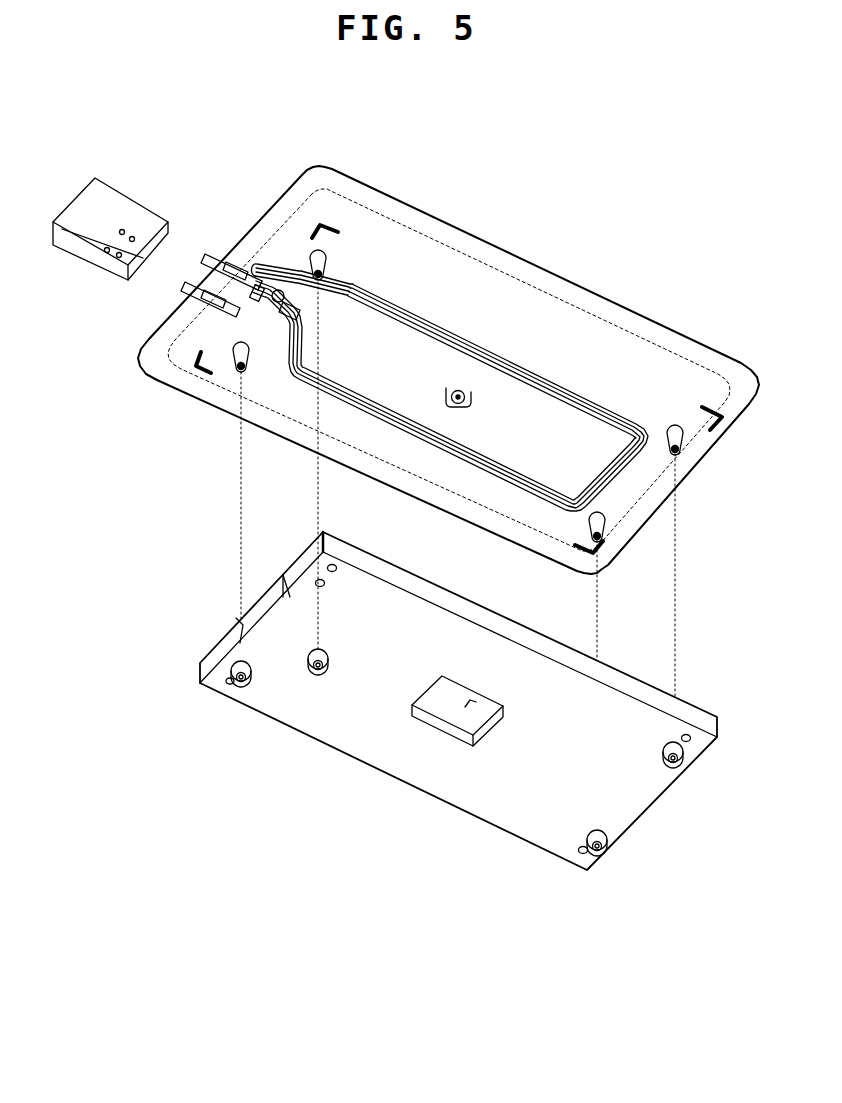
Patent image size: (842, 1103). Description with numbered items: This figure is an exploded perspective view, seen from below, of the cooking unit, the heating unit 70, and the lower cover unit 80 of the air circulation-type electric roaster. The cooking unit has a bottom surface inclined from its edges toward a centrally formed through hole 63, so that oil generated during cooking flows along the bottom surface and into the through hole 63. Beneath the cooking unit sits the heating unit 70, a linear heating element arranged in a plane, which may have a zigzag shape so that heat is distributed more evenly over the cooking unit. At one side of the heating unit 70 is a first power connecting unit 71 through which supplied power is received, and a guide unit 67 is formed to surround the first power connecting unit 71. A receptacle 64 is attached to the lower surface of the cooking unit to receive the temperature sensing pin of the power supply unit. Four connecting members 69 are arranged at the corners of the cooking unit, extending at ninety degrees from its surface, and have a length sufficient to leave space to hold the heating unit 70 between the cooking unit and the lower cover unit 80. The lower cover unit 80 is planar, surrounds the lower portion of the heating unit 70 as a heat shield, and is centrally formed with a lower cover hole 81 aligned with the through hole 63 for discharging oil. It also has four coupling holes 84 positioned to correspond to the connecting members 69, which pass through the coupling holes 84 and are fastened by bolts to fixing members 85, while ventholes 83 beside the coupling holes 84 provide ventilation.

The through hole 63 is at (470, 398).
The receptacle 64 is at (181, 284).
The guide unit 67 is at (112, 195).
The connecting members 69 is at (328, 263).
The heating unit 70 is at (432, 317).
The first power connecting unit 71 is at (217, 257).
The lower cover unit 80 is at (353, 670).
The lower cover hole 81 is at (470, 708).
The ventholes 83 is at (328, 562).
The coupling holes 84 is at (290, 597).
The fixing members 85 is at (310, 657).